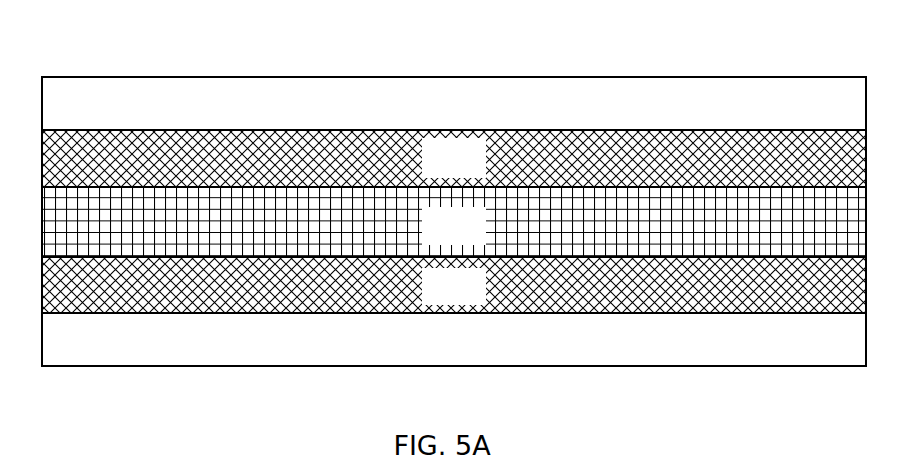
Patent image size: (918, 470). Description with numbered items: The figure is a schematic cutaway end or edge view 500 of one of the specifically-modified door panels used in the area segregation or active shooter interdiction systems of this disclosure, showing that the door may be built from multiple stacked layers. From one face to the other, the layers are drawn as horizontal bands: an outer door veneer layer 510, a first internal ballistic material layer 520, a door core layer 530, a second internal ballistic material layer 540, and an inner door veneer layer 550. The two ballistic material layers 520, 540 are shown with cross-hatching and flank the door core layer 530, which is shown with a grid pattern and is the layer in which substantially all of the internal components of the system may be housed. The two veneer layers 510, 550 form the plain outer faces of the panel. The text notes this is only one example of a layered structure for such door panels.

The cutaway end or edge view 500 is at (57, 44).
The outer door veneer layer 510 is at (454, 339).
The first internal ballistic material layer 520 is at (454, 285).
The door core layer 530 is at (454, 222).
The second internal ballistic material layer 540 is at (454, 158).
The inner door veneer layer 550 is at (454, 103).